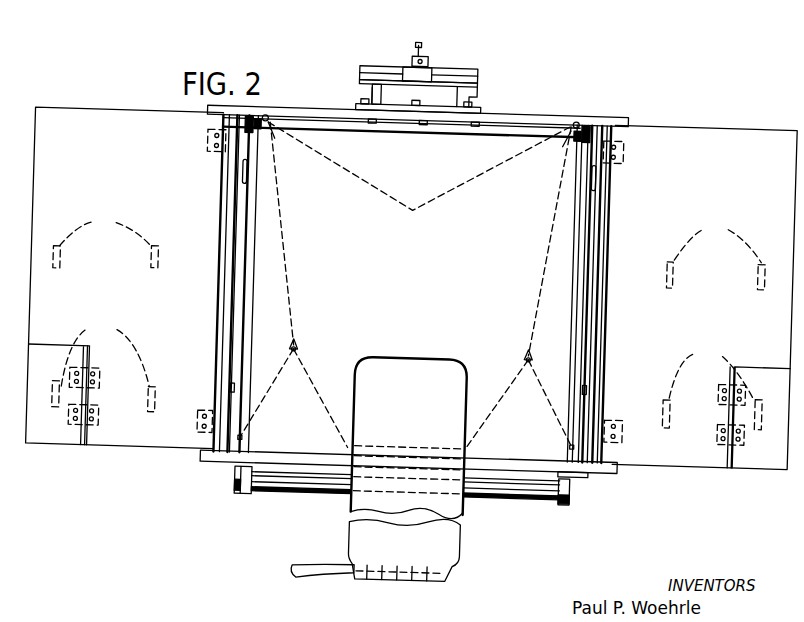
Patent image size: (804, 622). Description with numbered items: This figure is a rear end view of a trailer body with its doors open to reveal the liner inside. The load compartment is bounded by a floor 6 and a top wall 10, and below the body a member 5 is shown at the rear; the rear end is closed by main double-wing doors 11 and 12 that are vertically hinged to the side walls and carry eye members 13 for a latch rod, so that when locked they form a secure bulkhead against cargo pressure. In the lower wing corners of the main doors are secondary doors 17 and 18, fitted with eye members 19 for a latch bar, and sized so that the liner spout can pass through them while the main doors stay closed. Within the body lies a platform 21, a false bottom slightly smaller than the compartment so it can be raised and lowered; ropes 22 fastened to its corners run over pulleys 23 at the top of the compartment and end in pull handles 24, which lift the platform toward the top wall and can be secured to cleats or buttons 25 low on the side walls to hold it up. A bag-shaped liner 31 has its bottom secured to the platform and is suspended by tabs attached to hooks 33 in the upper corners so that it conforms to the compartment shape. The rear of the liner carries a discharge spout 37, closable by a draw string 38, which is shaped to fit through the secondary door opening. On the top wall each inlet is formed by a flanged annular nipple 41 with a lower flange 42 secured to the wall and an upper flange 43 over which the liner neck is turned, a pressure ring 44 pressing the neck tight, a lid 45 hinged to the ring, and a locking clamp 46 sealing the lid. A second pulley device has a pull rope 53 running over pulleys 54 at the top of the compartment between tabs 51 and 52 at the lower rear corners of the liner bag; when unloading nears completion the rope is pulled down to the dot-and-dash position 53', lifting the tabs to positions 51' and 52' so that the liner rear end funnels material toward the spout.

The lower guide rail 5 is at (528, 494).
The floor 6 is at (290, 484).
The top wall 10 is at (536, 120).
The main double-wing door 11 is at (138, 118).
The main double-wing door 12 is at (672, 120).
The eye members 13 is at (410, 245).
The secondary door 17 is at (47, 456).
The secondary door 18 is at (745, 458).
The eye members 19 is at (408, 371).
The platform 21 is at (233, 468).
The ropes 22 is at (232, 311).
The pulleys 23 is at (238, 133).
The pull handles 24 is at (237, 176).
The cleats or buttons 25 is at (232, 392).
The bag-shaped liner 31 is at (341, 134).
The hooks 33 is at (256, 119).
The discharge spout 37 is at (360, 536).
The draw string 38 is at (313, 583).
The flanged annular nipple 41 is at (366, 95).
The lower flange 42 is at (458, 98).
The upper flange 43 is at (472, 83).
The pressure ring 44 is at (472, 74).
The lid 45 is at (465, 68).
The locking clamp 46 is at (418, 56).
The corner tab 51 is at (294, 397).
The lifted position of corner tab 51' is at (303, 237).
The corner tab 52 is at (522, 404).
The lifted position of corner tab 52' is at (529, 247).
The pull rope 53 is at (412, 289).
The pulled-down position of pull rope 53' is at (417, 217).
The pulleys 54 is at (268, 143).